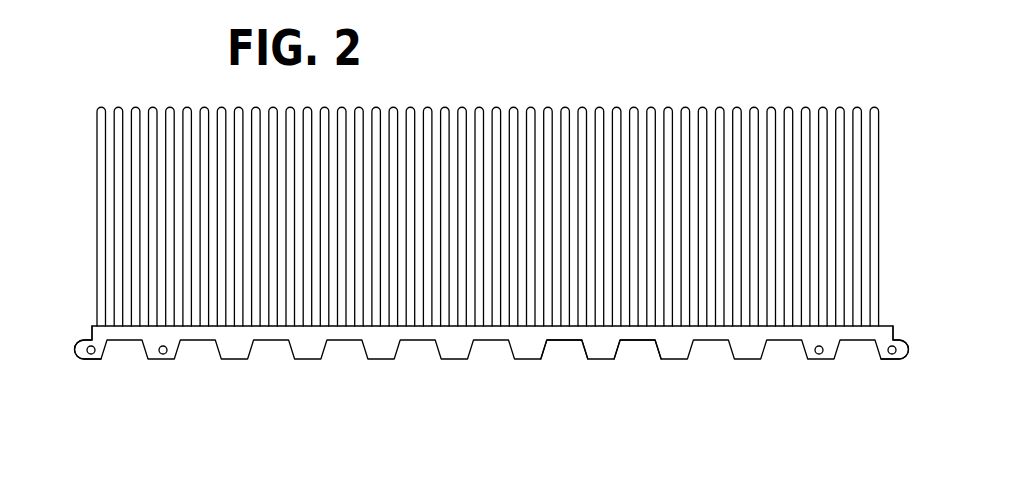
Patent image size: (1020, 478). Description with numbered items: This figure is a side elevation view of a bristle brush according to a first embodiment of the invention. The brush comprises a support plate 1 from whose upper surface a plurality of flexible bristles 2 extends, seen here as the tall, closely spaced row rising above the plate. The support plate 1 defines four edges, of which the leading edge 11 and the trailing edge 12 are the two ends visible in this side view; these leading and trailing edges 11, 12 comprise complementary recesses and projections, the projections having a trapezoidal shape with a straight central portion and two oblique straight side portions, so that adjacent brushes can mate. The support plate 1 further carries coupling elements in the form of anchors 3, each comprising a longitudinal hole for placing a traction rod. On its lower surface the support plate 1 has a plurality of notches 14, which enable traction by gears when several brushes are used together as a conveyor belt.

The support plate 1 is at (371, 364).
The flexible bristles 2 is at (618, 127).
The anchors 3 is at (97, 355).
The leading edge 11 is at (894, 310).
The trailing edge 12 is at (83, 302).
The notches 14 is at (633, 348).